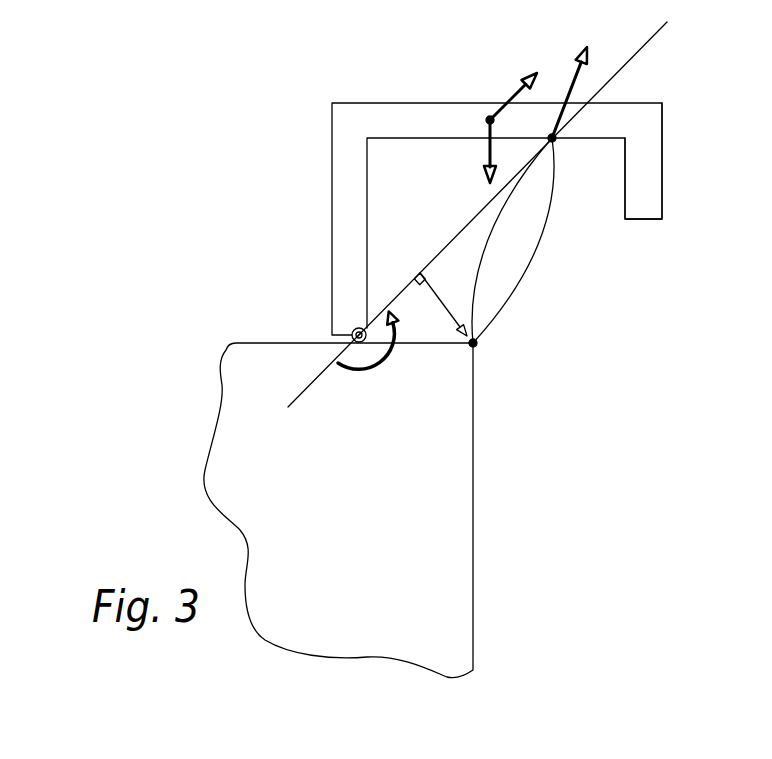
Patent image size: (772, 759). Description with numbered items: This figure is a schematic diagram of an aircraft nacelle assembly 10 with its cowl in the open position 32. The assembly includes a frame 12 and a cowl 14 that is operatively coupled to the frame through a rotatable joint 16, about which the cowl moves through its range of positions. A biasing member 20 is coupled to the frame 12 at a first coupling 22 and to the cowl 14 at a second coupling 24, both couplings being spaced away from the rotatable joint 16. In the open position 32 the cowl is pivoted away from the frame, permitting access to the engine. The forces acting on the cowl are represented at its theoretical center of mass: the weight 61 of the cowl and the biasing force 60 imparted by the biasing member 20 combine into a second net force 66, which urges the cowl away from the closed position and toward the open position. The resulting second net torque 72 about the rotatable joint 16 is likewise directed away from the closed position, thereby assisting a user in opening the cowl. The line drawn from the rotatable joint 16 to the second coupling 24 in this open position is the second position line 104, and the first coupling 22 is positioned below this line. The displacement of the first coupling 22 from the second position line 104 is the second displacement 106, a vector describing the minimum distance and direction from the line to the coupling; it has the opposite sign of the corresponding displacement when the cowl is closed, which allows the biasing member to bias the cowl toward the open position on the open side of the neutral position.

The nacelle assembly 10 is at (118, 147).
The frame 12 is at (262, 342).
The cowl 14 is at (662, 171).
The rotatable joint 16 is at (354, 328).
The biasing member 20 is at (540, 236).
The first coupling 22 is at (477, 345).
The second coupling 24 is at (555, 142).
The open position 32 is at (300, 93).
The biasing force 60 is at (574, 78).
The weight 61 is at (487, 148).
The second net force 66 is at (513, 92).
The second net torque 72 is at (350, 373).
The second position line 104 is at (649, 40).
The second displacement 106 is at (440, 316).